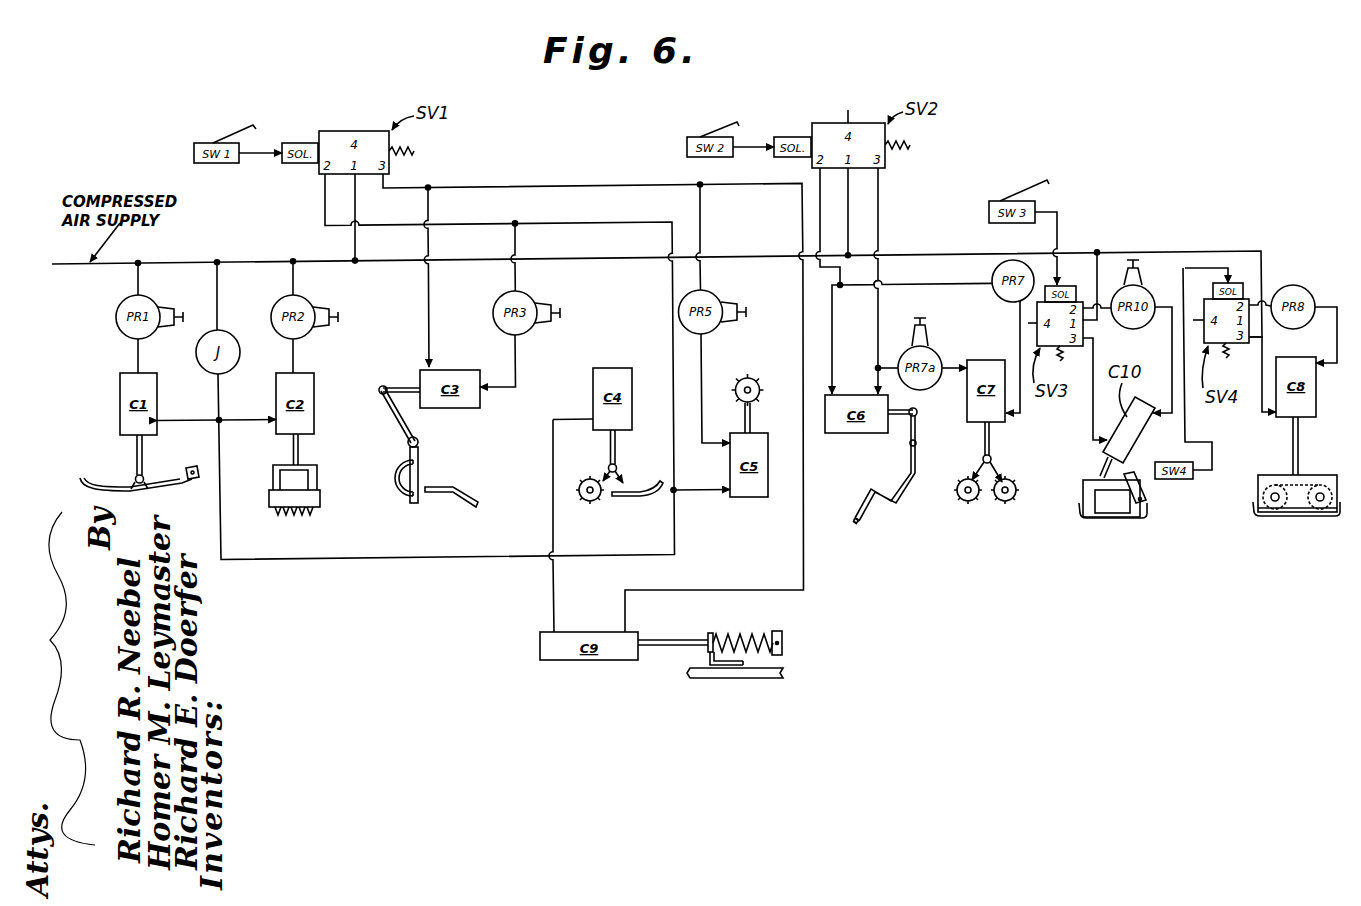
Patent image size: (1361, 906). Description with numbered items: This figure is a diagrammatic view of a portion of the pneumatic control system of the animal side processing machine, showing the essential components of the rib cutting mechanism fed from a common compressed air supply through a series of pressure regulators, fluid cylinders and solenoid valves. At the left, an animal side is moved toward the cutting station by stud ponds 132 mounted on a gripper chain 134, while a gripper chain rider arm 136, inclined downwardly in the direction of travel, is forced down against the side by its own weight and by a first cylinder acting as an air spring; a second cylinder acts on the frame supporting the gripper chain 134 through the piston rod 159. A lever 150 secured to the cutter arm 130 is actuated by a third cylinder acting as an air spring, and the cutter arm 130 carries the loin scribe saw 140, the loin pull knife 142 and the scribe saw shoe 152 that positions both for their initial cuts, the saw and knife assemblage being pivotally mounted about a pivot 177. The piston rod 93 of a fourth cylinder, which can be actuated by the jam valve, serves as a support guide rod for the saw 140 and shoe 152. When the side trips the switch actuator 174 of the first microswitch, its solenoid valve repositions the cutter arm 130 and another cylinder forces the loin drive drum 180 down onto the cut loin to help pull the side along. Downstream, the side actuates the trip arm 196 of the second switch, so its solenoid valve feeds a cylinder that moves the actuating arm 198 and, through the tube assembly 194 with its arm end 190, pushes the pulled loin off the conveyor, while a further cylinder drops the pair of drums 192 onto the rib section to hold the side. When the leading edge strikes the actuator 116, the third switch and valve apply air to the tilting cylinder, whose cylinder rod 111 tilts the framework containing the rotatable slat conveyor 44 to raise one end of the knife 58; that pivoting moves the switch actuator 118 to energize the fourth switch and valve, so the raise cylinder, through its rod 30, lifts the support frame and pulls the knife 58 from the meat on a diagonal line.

The switch actuator 174 is at (242, 120).
The trip arm 196 is at (724, 115).
The actuator 116 is at (1034, 188).
The loin drive drum 180 is at (767, 361).
The lever 150 is at (394, 425).
The pivot 177 is at (420, 440).
The cutter arm 130 is at (418, 470).
The loin pull knife 142 is at (396, 478).
The scribe saw shoe 152 is at (470, 487).
The piston rod 159 is at (292, 448).
The gripper chain 134 is at (318, 483).
The stud ponds 132 is at (293, 514).
The gripper chain rider arm 136 is at (160, 492).
The loin scribe saw 140 is at (581, 479).
The piston rod 93 is at (617, 445).
The tube assembly 194 is at (909, 460).
The actuating arm 198 is at (918, 424).
The arm end 190 is at (854, 520).
The drums 192 is at (1003, 502).
The cylinder rod 111 is at (1102, 458).
The switch actuator 118 is at (1148, 485).
The knife 58 is at (1098, 518).
The rotatable slat conveyor 44 is at (1115, 504).
The rod 30 is at (1300, 445).